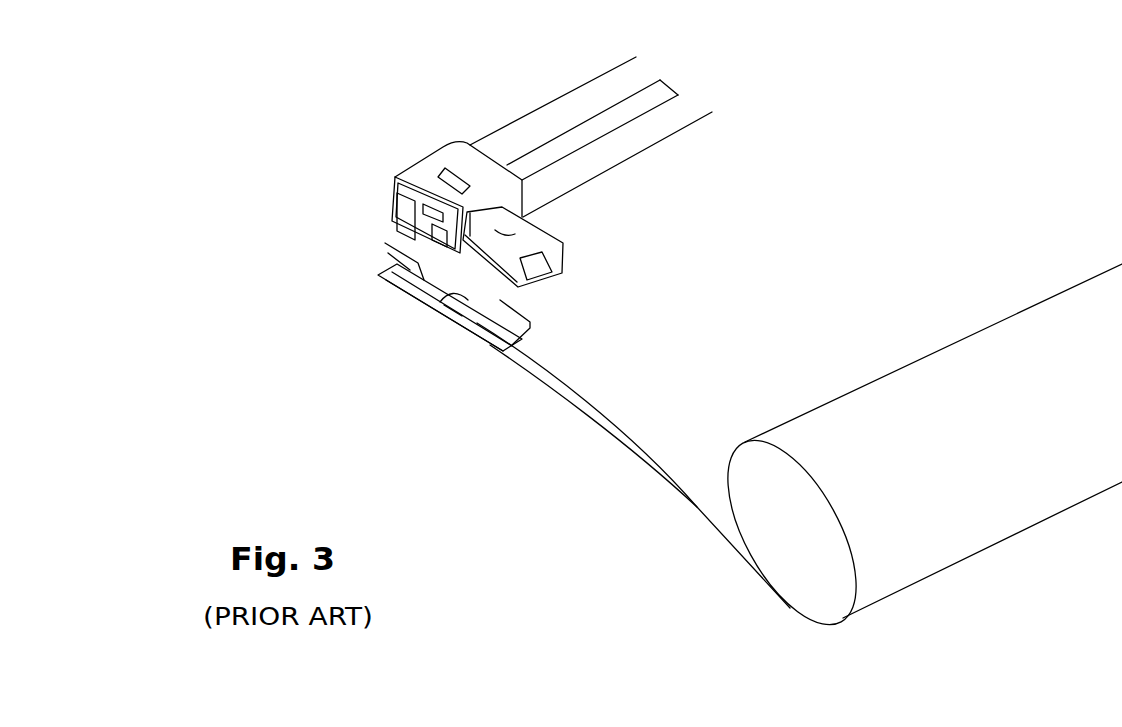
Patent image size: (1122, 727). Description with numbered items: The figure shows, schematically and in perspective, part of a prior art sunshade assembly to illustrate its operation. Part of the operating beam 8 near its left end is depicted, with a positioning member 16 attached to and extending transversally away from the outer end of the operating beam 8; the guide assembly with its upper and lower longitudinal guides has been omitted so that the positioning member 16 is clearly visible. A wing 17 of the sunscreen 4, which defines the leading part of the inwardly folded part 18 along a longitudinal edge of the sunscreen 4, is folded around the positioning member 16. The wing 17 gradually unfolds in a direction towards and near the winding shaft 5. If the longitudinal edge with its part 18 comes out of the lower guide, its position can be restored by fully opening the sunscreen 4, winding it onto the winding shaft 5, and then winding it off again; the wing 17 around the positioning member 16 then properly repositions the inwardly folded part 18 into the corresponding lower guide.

The operating beam 8 is at (502, 145).
The positioning member 16 is at (420, 260).
The wing 17 is at (392, 278).
The inwardly folded part 18 is at (552, 370).
The sunscreen 4 is at (604, 384).
The winding shaft 5 is at (988, 529).